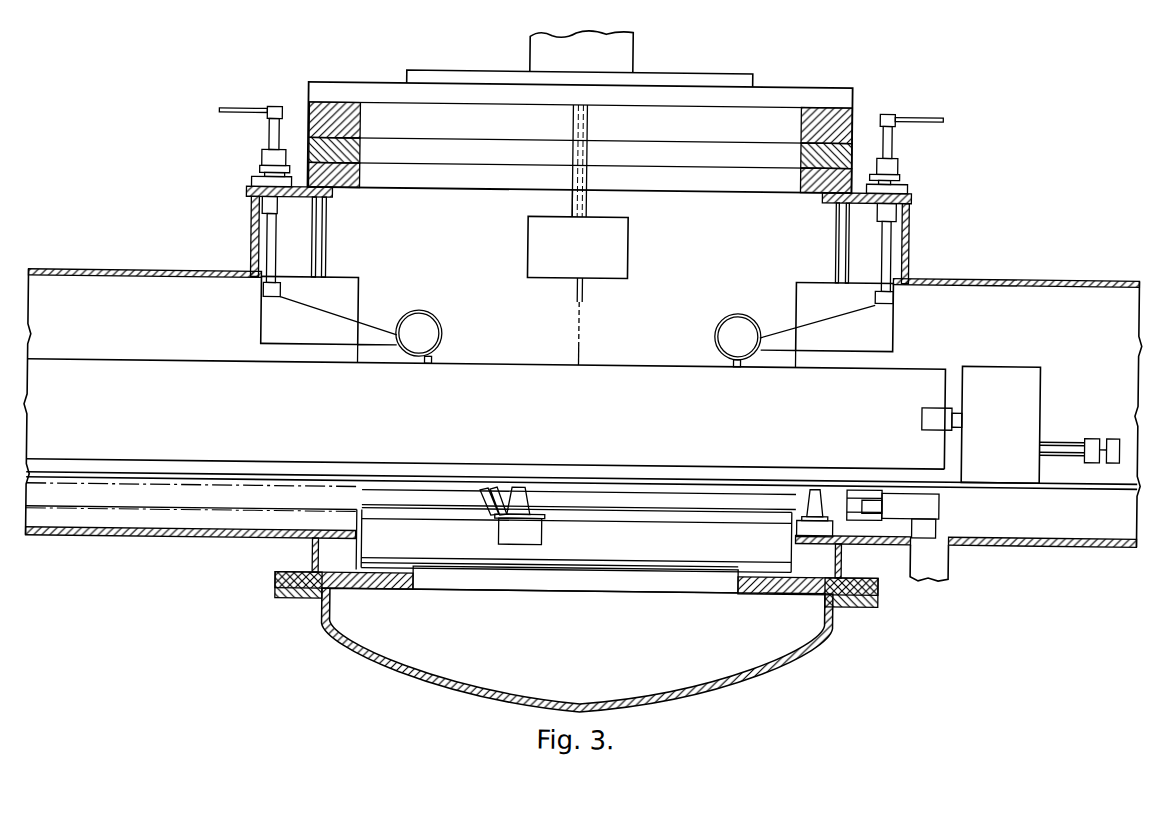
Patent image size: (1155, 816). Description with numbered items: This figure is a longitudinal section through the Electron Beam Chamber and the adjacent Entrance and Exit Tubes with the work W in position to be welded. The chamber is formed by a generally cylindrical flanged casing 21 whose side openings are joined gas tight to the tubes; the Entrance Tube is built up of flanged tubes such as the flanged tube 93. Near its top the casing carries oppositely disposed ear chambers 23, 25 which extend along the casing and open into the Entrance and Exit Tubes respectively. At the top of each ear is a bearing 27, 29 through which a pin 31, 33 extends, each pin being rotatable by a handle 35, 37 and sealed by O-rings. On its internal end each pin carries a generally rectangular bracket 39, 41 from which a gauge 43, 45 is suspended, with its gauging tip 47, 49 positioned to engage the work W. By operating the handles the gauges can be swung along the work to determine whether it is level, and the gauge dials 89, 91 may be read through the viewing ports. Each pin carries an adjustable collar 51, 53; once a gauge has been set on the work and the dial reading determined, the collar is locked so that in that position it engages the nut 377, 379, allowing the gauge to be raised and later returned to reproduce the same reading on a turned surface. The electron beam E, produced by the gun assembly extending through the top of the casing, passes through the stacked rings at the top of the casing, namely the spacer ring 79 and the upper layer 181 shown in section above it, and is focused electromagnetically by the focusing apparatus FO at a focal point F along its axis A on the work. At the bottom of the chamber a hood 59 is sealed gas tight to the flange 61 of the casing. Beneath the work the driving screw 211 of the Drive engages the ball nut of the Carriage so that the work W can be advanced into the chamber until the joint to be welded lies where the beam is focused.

The casing 21 is at (828, 232).
The ear chamber 23 is at (247, 196).
The ear chamber 25 is at (909, 191).
The bearing 27 is at (252, 186).
The bearing 29 is at (905, 182).
The pin 31 is at (266, 131).
The pin 33 is at (889, 128).
The handle 35 is at (244, 110).
The handle 37 is at (919, 113).
The bracket 39 is at (364, 330).
The bracket 41 is at (792, 325).
The gauge 43 is at (441, 338).
The gauge 45 is at (719, 322).
The gauging tip 47 is at (430, 364).
The gauging tip 49 is at (732, 363).
The adjustable collar 51 is at (259, 158).
The adjustable collar 53 is at (895, 158).
The hood 59 is at (305, 601).
The flange 61 is at (288, 575).
The spacer ring 79 is at (352, 155).
The gauge dial 89 is at (422, 325).
The gauge dial 91 is at (722, 335).
The flanged tube 93 is at (193, 276).
The insulating layer 181 is at (348, 121).
The driving screw 211 is at (489, 500).
The nut 377 is at (255, 172).
The nut 379 is at (898, 172).
The axis A is at (570, 204).
The electron beam E is at (586, 204).
The focusing apparatus FO is at (623, 231).
The work W is at (540, 364).
The focal point F is at (581, 364).